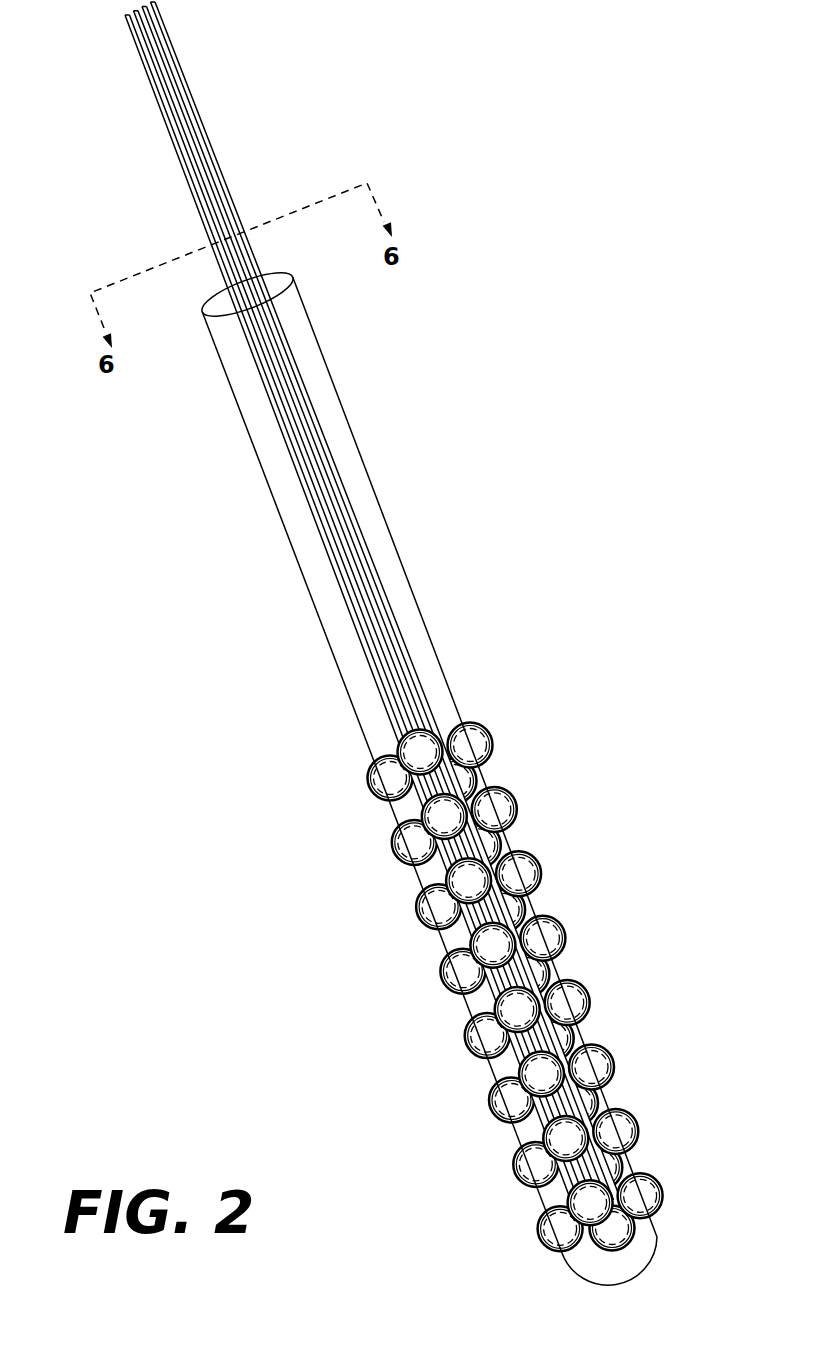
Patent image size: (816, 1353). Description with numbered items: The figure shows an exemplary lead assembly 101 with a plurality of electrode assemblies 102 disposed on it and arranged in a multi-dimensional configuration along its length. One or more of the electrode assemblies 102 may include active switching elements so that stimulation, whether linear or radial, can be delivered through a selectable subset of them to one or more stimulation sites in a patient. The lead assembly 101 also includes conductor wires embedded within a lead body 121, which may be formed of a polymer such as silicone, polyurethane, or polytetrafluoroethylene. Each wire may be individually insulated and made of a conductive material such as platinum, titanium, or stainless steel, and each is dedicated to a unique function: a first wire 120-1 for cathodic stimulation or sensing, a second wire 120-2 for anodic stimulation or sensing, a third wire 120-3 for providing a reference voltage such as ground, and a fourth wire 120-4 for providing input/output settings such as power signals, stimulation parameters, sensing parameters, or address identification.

The lead assembly 101 is at (578, 632).
The electrode assemblies 102 is at (501, 1004).
The first wire 120-1 is at (140, 50).
The second wire 120-2 is at (164, 94).
The third wire 120-3 is at (192, 134).
The fourth wire 120-4 is at (218, 174).
The lead body 121 is at (374, 490).